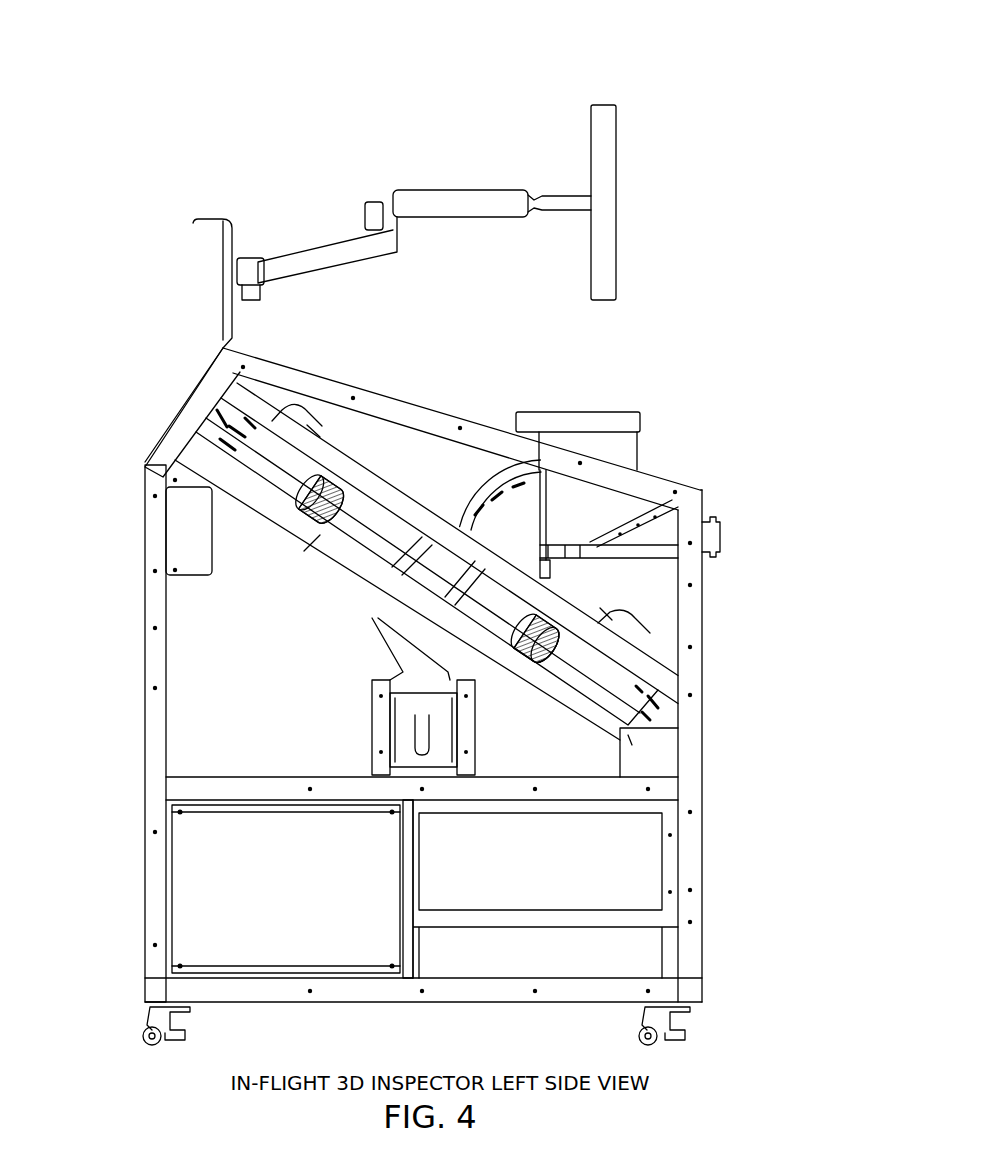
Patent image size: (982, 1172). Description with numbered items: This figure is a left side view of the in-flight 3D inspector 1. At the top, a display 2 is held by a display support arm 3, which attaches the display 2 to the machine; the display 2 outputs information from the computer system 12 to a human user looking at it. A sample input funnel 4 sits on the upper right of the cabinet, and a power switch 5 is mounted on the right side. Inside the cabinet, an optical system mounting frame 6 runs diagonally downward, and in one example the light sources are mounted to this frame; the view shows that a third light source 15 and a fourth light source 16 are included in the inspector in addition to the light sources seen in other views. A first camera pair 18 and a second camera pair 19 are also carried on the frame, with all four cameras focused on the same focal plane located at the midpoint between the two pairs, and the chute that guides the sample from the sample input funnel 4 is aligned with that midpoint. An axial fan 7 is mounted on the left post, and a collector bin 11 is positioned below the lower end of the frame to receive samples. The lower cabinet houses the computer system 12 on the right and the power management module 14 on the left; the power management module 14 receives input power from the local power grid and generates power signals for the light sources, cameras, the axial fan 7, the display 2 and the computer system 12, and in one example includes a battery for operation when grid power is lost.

The in-flight 3D inspector 1 is at (140, 82).
The display 2 is at (603, 104).
The display support arm 3 is at (440, 189).
The sample input funnel 4 is at (645, 418).
The power switch 5 is at (723, 537).
The optical system mounting frame 6 is at (254, 411).
The axial fan 7 is at (184, 525).
The collector bin 11 is at (477, 714).
The computer system 12 is at (603, 867).
The power management module 14 is at (206, 920).
The third light source 15 is at (500, 632).
The fourth light source 16 is at (305, 517).
The first camera pair 18 is at (662, 712).
The second camera pair 19 is at (213, 423).